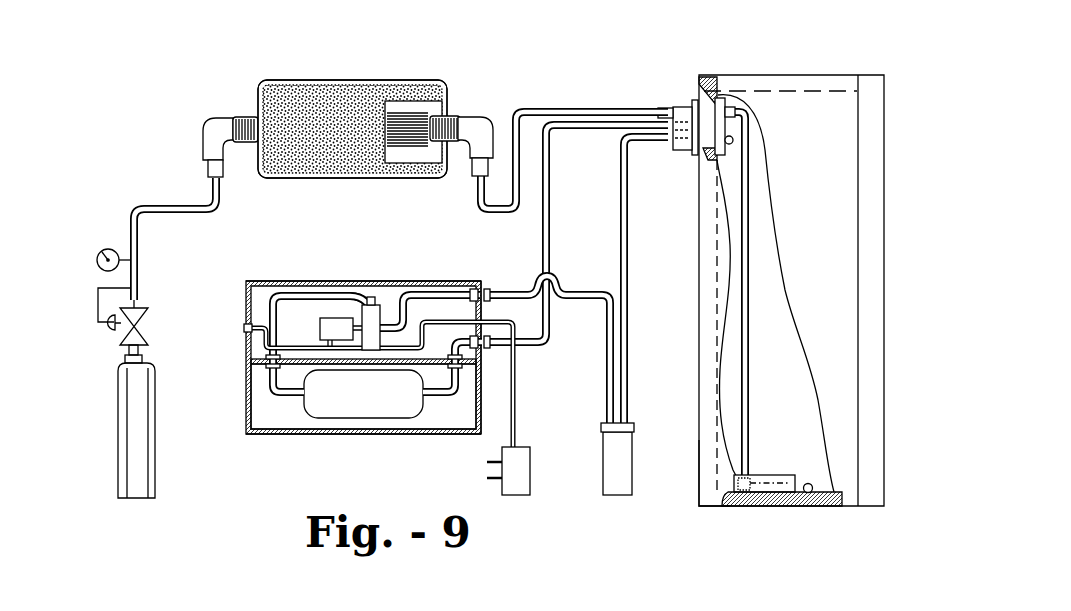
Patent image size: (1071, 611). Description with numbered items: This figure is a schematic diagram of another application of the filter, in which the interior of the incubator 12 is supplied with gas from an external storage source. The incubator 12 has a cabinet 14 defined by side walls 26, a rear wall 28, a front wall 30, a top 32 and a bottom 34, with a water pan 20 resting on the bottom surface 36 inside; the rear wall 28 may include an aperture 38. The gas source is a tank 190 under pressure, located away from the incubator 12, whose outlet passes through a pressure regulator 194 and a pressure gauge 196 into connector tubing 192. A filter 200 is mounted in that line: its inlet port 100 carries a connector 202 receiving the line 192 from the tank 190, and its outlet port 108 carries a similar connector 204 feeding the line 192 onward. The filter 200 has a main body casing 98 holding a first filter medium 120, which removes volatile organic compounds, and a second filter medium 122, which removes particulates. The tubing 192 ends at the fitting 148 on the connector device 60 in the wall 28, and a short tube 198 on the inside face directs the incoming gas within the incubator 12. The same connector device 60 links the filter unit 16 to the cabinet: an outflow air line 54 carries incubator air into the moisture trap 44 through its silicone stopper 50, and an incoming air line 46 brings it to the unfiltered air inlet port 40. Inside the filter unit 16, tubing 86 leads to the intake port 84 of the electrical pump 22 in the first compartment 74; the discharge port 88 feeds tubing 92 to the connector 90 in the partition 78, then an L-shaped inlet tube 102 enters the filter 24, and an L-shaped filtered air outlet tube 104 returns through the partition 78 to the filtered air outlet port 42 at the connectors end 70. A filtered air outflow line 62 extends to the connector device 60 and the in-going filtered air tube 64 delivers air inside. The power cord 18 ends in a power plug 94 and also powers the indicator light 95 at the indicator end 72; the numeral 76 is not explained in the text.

The incubator 12 is at (699, 485).
The cabinet 14 is at (826, 76).
The filter unit 16 is at (299, 281).
The power cord 18 is at (483, 397).
The water pan 20 is at (747, 492).
The electrical pump 22 is at (372, 298).
The filter 24 is at (317, 405).
The side walls 26 is at (768, 245).
The rear wall 28 is at (712, 162).
The front wall 30 is at (875, 83).
The top 32 is at (792, 87).
The bottom 34 is at (797, 497).
The bottom surface 36 is at (822, 497).
The aperture 38 is at (698, 160).
The unfiltered air inlet port 40 is at (486, 290).
The filtered air outlet port 42 is at (488, 344).
The moisture trap 44 is at (625, 448).
The incoming air line 46 is at (610, 338).
The silicone stopper 50 is at (637, 423).
The outflow air line 54 is at (628, 340).
The connector device 60 is at (688, 151).
The filtered air outflow line 62 is at (550, 248).
The in-going filtered air tube 64 is at (743, 445).
The connectors end 70 is at (480, 400).
The indicator end 72 is at (247, 430).
The first compartment 74 is at (263, 292).
The lower compartment 76 is at (267, 421).
The partition 78 is at (262, 355).
The intake port 84 is at (382, 318).
The tubing 86 is at (430, 293).
The discharge port 88 is at (377, 303).
The connector 90 is at (265, 372).
The tubing 92 is at (271, 310).
The power plug 94 is at (522, 472).
The indicator light 95 is at (246, 326).
The main body casing 98 is at (313, 80).
The inlet port 100 is at (253, 113).
The L-shaped inlet tube 102 is at (295, 393).
The L-shaped filtered air outlet tube 104 is at (440, 393).
The outlet port 108 is at (450, 112).
The first filter medium 120 is at (330, 182).
The second filter medium 122 is at (417, 182).
The fitting 148 is at (670, 108).
The tank 190 is at (155, 466).
The connector tubing 192 is at (173, 210).
The pressure regulator 194 is at (132, 332).
The pressure gauge 196 is at (110, 250).
The short tube 198 is at (728, 112).
The filter 200 is at (360, 55).
The connector 202 is at (213, 147).
The connector 204 is at (467, 127).